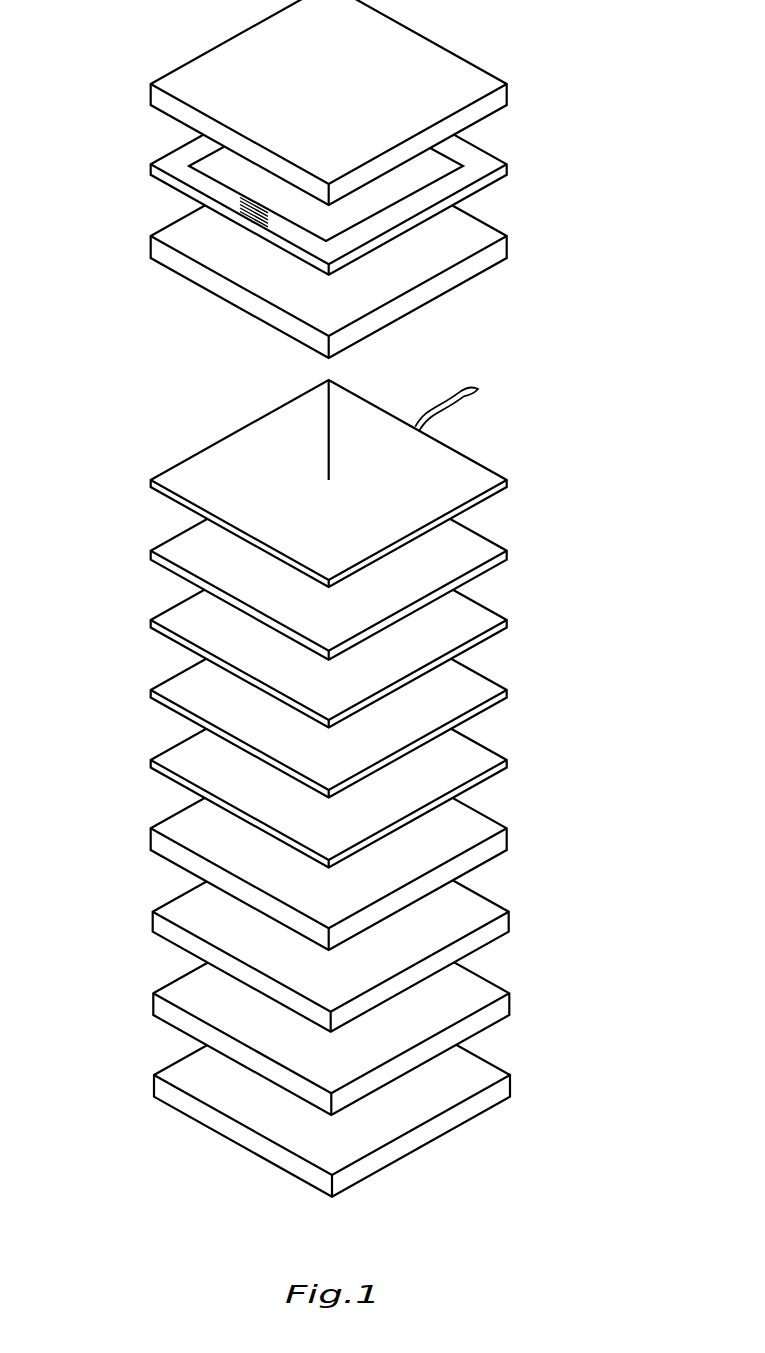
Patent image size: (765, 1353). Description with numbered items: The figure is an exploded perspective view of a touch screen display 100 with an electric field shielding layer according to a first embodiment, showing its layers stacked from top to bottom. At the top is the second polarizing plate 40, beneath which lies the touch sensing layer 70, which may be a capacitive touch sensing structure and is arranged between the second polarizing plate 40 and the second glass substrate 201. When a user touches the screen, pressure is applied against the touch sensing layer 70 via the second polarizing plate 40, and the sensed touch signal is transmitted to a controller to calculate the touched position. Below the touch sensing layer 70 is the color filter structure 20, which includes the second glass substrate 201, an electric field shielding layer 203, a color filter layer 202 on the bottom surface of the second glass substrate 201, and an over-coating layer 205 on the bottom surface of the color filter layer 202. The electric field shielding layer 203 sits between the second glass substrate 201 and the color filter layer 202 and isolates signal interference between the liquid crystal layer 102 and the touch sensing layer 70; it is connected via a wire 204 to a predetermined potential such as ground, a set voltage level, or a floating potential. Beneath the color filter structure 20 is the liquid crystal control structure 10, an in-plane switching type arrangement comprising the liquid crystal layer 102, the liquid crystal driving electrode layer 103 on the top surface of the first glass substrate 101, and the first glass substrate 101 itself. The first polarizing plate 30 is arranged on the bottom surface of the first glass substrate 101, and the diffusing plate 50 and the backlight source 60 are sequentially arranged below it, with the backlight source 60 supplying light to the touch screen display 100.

The touch screen display 100 is at (337, 598).
The second polarizing plate 40 is at (366, 102).
The touch sensing layer 70 is at (503, 168).
The color filter structure 20 is at (407, 432).
The second glass substrate 201 is at (373, 247).
The electric field shielding layer 203 is at (503, 483).
The wire 204 is at (440, 403).
The color filter layer 202 is at (503, 554).
The over-coating layer 205 is at (503, 623).
The liquid crystal control structure 10 is at (407, 770).
The liquid crystal layer 102 is at (373, 694).
The liquid crystal driving electrode layer 103 is at (503, 763).
The first glass substrate 101 is at (503, 837).
The first polarizing plate 30 is at (503, 920).
The diffusing plate 50 is at (503, 1002).
The backlight source 60 is at (503, 1084).